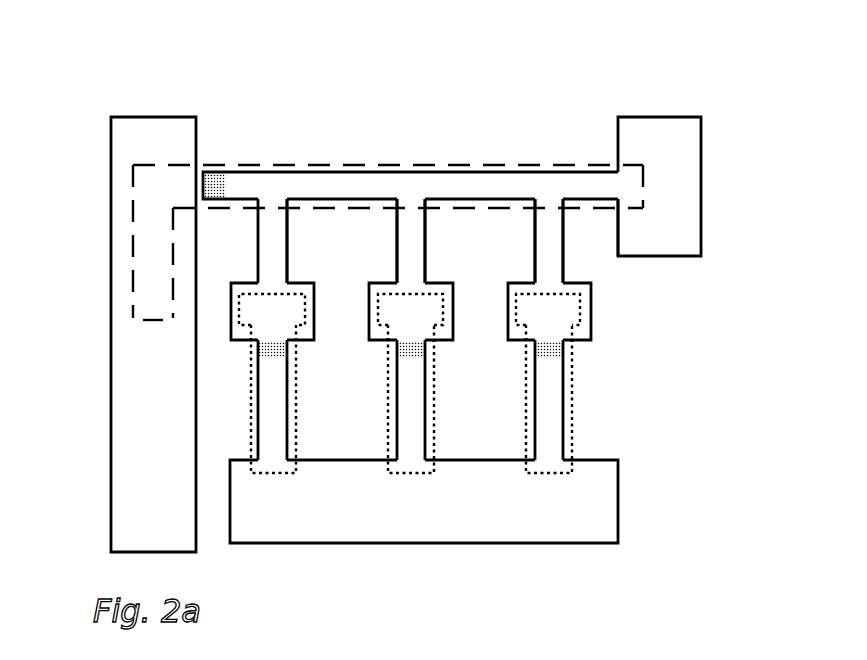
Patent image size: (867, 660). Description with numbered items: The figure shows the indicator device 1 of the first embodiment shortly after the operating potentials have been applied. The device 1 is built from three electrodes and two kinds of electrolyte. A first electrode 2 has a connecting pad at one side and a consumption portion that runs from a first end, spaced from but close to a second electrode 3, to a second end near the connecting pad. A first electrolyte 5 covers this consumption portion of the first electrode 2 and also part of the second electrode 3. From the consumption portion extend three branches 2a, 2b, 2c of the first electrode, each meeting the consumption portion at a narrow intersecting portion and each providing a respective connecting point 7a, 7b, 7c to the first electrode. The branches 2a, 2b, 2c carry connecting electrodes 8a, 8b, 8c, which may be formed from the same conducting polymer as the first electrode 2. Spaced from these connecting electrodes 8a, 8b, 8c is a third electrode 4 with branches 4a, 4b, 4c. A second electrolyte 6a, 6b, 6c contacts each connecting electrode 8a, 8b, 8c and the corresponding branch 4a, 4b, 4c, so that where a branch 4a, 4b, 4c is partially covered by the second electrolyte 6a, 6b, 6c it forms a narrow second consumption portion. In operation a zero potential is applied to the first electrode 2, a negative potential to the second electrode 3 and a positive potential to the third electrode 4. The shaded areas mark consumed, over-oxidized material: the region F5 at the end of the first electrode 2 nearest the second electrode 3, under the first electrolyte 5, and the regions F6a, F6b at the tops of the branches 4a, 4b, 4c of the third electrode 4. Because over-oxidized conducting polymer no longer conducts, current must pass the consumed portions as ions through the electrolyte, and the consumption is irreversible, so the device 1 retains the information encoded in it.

The indicator device 1 is at (88, 112).
The first electrode 2 is at (701, 177).
The second electrode 3 is at (111, 400).
The third electrode 4 is at (618, 507).
The first electrolyte 5 is at (318, 170).
The ink flow in supply channel F5 is at (227, 187).
The connecting point 7a is at (277, 197).
The connecting point 7b is at (407, 197).
The connecting point 7c is at (549, 197).
The branch of the first electrode 2a is at (289, 243).
The branch of the first electrode 2b is at (428, 243).
The branch of the first electrode 2c is at (565, 242).
The connecting electrode 8a is at (316, 317).
The connecting electrode 8b is at (455, 317).
The connecting electrode 8c is at (591, 305).
The second electrolyte 6a is at (292, 372).
The second electrolyte 6b is at (431, 372).
The second electrolyte 6c is at (569, 375).
The branch of the third electrode 4a is at (297, 402).
The branch of the third electrode 4b is at (435, 402).
The branch of the third electrode 4c is at (573, 402).
The ink flow in nozzle channel F6a is at (276, 352).
The ink flow in nozzle channel F6b is at (414, 352).